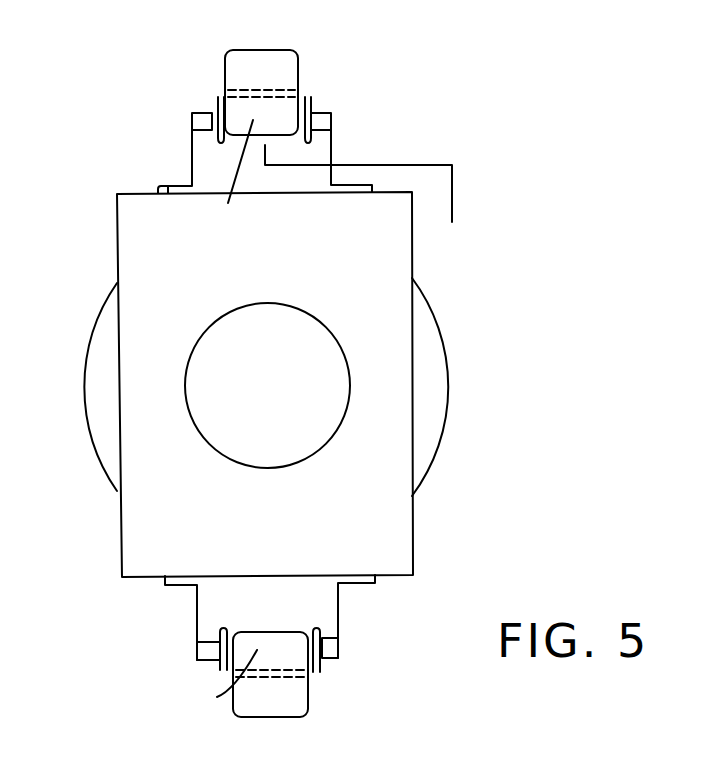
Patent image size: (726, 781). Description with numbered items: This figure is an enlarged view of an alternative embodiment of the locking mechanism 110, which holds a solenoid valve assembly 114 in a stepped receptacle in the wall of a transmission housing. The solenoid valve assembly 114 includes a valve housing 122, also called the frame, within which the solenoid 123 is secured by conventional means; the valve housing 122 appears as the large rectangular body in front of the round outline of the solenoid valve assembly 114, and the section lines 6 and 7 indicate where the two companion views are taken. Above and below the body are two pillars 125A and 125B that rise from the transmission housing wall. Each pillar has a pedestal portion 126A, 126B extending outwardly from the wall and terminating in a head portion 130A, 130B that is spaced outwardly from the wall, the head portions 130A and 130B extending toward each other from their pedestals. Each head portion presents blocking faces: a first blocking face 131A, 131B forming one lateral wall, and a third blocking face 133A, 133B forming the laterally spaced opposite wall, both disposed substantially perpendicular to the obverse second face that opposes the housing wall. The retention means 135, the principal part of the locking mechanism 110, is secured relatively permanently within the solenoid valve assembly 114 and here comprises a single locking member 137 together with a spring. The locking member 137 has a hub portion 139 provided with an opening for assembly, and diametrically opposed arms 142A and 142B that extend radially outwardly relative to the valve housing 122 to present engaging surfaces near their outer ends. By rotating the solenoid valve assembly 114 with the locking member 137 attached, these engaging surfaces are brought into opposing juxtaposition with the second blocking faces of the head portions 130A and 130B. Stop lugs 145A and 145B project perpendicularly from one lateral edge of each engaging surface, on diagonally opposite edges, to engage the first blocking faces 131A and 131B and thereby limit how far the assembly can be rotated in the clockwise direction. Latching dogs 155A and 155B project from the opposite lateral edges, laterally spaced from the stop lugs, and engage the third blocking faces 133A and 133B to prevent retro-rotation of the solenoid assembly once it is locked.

The section line 6- 6 is at (147, 143).
The section line 7- 7 is at (263, 43).
The locking mechanism 110 is at (432, 152).
The solenoid valve assembly 114 is at (447, 331).
The valve housing 122 is at (388, 250).
The solenoid 123 is at (276, 360).
The pillar 125A is at (296, 53).
The pillar 125B is at (240, 718).
The pedestal portion 126A is at (273, 45).
The pedestal portion 126B is at (273, 720).
The head portion 130A is at (223, 174).
The head portion 130B is at (205, 682).
The first blocking face 131A is at (228, 80).
The first blocking face 131B is at (310, 682).
The third blocking face 133A is at (306, 113).
The third blocking face 133B is at (228, 660).
The retention means 135 is at (360, 596).
The locking member 137 is at (185, 595).
The hub portion 139 is at (157, 185).
The arm 142A is at (218, 160).
The arm 142B is at (290, 595).
The stop lug 145A is at (190, 122).
The stop lug 145B is at (325, 647).
The latching dog 155A is at (331, 123).
The latching dog 155B is at (207, 650).